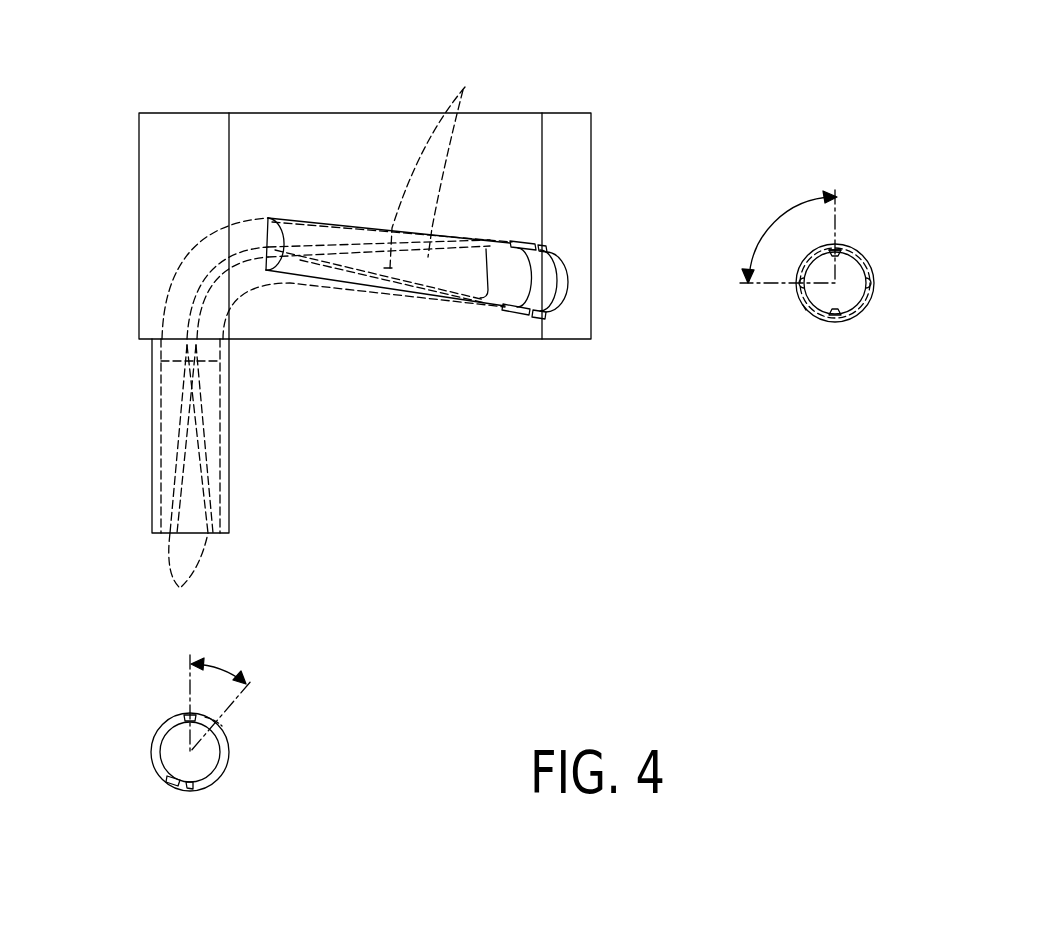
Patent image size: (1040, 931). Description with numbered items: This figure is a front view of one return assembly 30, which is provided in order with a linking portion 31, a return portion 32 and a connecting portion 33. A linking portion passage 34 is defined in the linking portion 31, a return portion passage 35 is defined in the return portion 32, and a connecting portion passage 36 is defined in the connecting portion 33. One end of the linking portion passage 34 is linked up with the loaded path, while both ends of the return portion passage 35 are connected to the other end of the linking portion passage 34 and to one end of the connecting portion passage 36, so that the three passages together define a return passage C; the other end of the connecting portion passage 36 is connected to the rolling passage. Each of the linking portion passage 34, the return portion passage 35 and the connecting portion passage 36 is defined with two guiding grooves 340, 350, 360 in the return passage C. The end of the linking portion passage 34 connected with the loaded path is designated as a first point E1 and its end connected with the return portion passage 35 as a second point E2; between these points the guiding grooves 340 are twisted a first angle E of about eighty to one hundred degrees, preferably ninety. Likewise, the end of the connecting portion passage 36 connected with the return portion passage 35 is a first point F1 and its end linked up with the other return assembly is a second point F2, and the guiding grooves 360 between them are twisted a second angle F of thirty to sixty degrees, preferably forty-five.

The return assembly 30 is at (365, 340).
The linking portion 31 is at (508, 197).
The return portion 32 is at (193, 183).
The connecting portion 33 is at (230, 437).
The linking portion passage 34 is at (460, 267).
The guiding grooves 340 is at (447, 164).
The return portion passage 35 is at (210, 273).
The guiding grooves 350 is at (198, 312).
The connecting portion passage 36 is at (175, 425).
The guiding grooves 360 is at (191, 485).
The return passage C is at (250, 228).
The first angle E is at (788, 236).
The first point E1 is at (840, 250).
The second point E2 is at (805, 313).
The second angle F is at (201, 715).
The first point F1 is at (188, 717).
The second point F2 is at (217, 724).